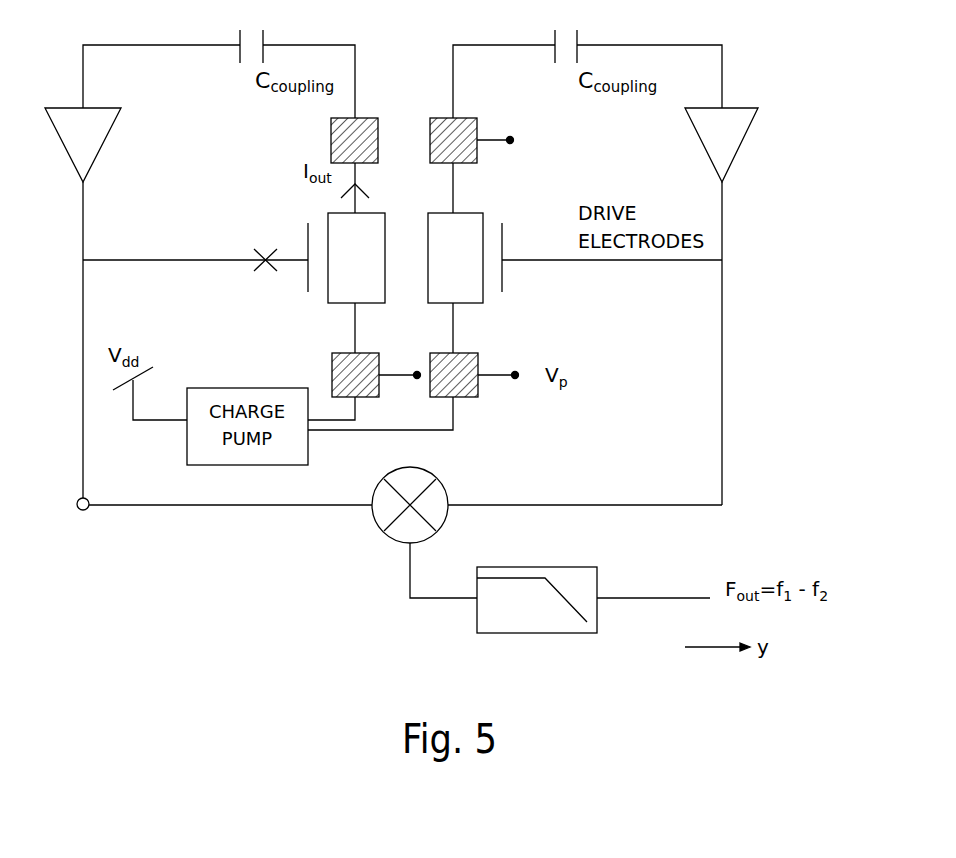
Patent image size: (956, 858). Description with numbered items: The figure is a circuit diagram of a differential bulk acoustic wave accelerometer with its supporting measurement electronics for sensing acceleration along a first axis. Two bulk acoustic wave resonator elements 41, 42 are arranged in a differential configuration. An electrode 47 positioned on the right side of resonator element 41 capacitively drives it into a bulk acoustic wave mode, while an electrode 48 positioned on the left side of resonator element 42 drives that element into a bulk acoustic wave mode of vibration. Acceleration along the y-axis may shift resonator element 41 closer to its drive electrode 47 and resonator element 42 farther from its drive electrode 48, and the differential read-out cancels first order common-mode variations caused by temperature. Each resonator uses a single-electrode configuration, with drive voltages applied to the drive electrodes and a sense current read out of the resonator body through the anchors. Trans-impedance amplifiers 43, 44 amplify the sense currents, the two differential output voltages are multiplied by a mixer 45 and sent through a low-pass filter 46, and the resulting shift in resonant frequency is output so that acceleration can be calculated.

The bulk acoustic wave resonator element 41 is at (485, 295).
The bulk acoustic wave resonator element 42 is at (335, 302).
The trans-impedance amplifier 43 is at (735, 160).
The trans-impedance amplifier 44 is at (70, 160).
The mixer 45 is at (376, 521).
The low-pass filter 46 is at (570, 636).
The electrode 47 is at (517, 236).
The electrode 48 is at (300, 232).